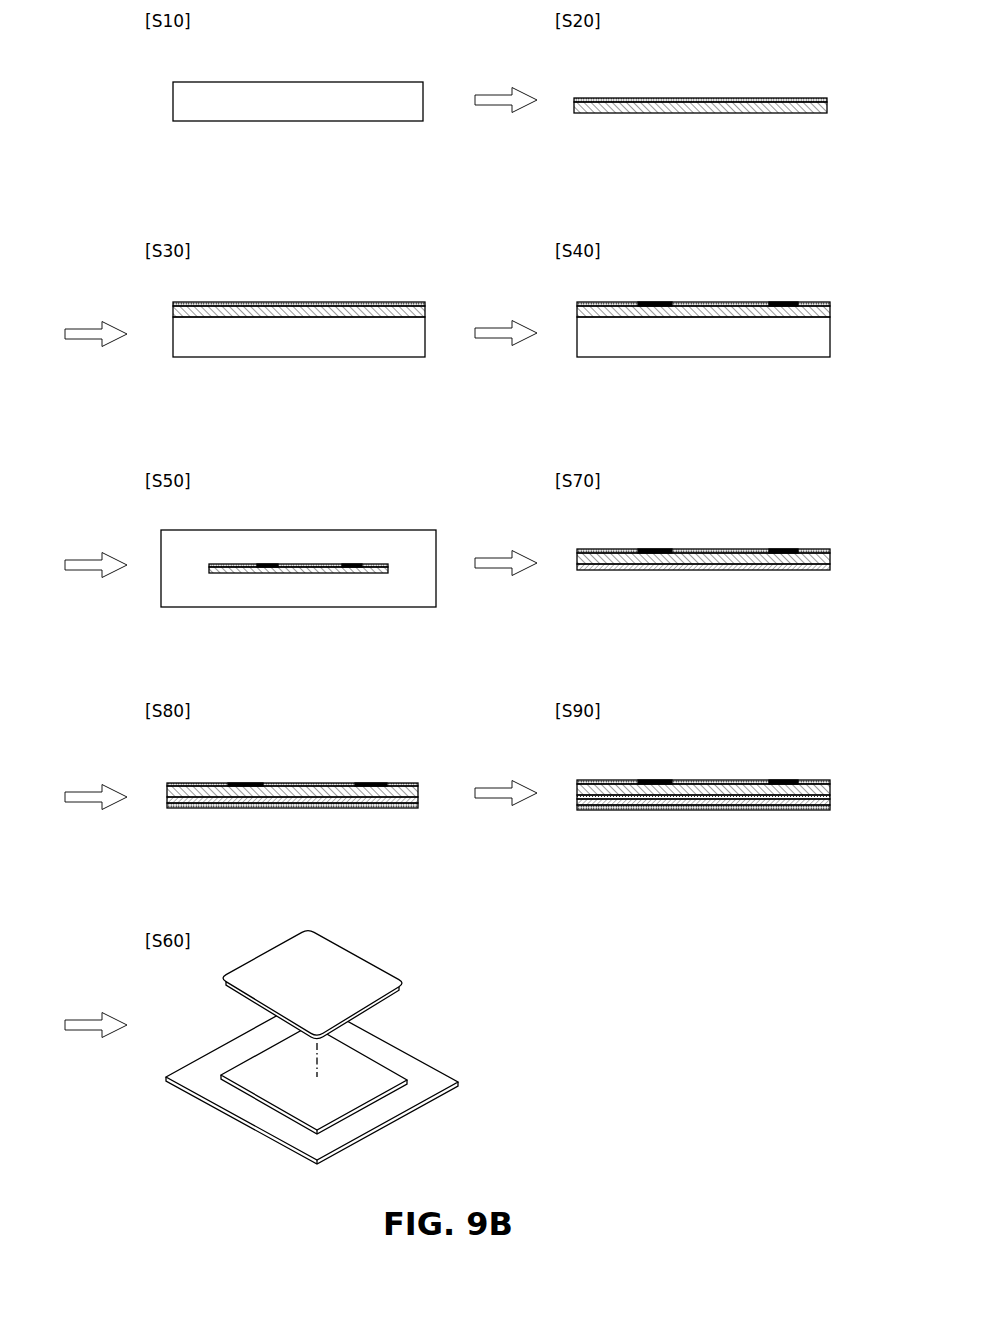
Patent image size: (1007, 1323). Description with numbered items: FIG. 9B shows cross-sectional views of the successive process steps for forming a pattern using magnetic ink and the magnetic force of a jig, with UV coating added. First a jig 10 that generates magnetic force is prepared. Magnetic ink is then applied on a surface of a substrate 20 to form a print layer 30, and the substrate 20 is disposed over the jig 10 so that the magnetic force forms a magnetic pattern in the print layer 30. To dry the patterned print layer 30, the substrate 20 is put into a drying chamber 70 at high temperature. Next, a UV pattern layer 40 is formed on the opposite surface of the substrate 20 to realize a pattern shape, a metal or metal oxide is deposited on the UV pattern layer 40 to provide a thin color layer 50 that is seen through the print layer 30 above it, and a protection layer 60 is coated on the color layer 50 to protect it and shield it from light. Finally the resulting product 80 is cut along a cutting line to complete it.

The jig 10 is at (368, 107).
The substrate 20 is at (784, 103).
The print layer 30 is at (744, 98).
The UV pattern layer 40 is at (810, 570).
The color layer 50 is at (355, 810).
The protection layer 60 is at (722, 812).
The drying chamber 70 is at (367, 608).
The resulting product 80 is at (402, 956).